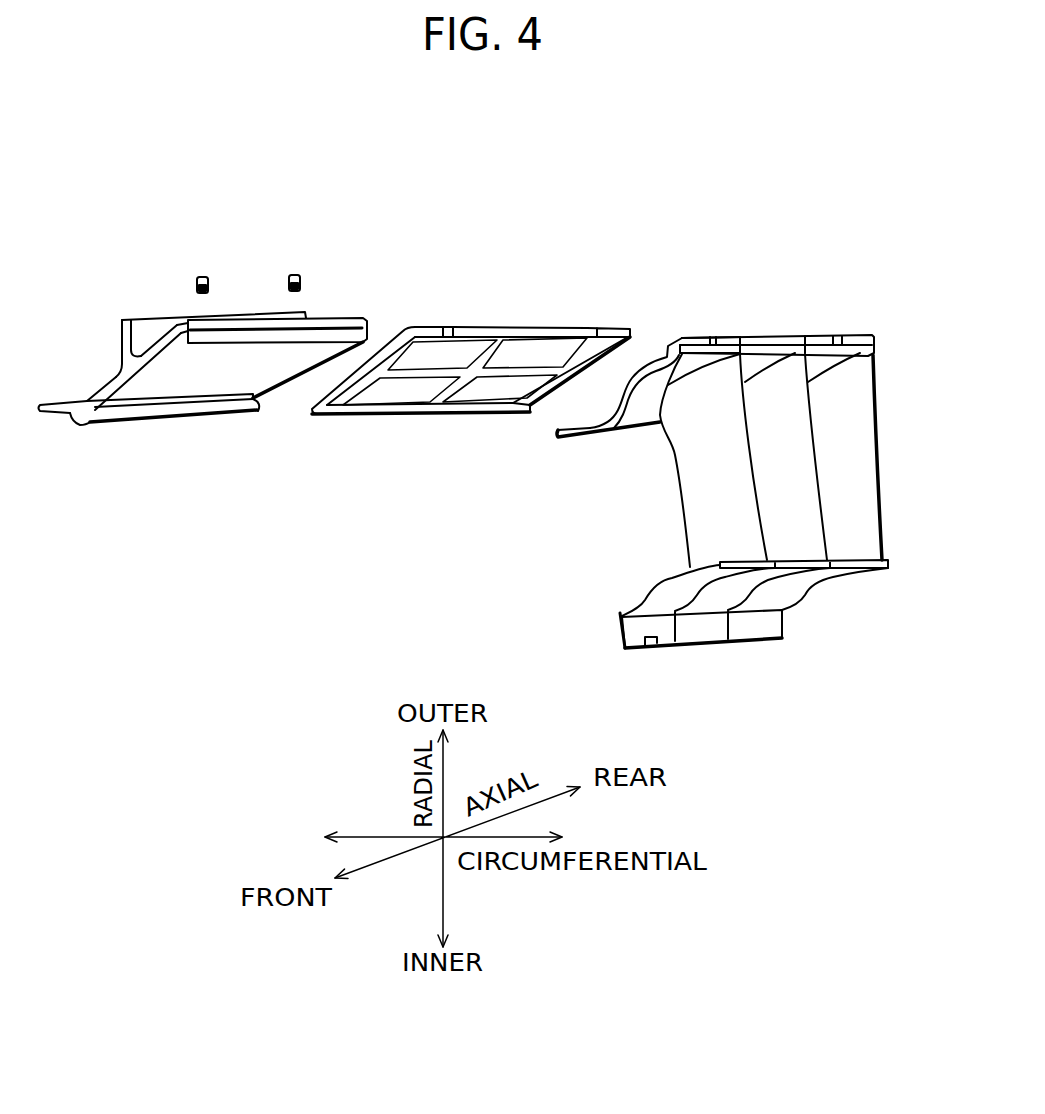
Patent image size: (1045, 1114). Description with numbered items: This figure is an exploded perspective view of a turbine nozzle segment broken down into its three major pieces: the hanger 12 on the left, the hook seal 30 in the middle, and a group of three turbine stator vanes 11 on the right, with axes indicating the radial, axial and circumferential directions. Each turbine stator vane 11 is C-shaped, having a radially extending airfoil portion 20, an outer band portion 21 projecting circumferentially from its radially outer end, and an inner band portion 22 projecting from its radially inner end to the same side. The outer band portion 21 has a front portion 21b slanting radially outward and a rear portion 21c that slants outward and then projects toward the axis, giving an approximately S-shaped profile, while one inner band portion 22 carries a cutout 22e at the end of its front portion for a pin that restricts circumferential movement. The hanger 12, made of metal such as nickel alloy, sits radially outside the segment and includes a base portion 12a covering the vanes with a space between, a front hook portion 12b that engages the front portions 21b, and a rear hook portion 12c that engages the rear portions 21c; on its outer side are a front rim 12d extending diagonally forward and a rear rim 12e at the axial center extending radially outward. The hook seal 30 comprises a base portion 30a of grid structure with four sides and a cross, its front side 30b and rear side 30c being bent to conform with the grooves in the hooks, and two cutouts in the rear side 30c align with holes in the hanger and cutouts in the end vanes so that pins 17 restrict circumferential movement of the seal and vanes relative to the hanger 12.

The turbine stator vane 11 is at (758, 482).
The hanger 12 is at (193, 372).
The base portion 12a is at (180, 388).
The front hook portion 12b is at (86, 427).
The rear hook portion 12c is at (338, 323).
The front rim 12d is at (40, 402).
The rear rim 12e is at (138, 317).
The pin 17 is at (292, 274).
The airfoil portion 20 is at (725, 483).
The outer band portion 21 is at (693, 381).
The front portion 21b is at (557, 433).
The rear portion 21c is at (690, 337).
The inner band portion 22 is at (736, 624).
The cutout 22e is at (650, 645).
The hook seal 30 is at (471, 356).
The base portion 30a is at (473, 377).
The front side 30b is at (367, 420).
The rear side 30c is at (497, 328).